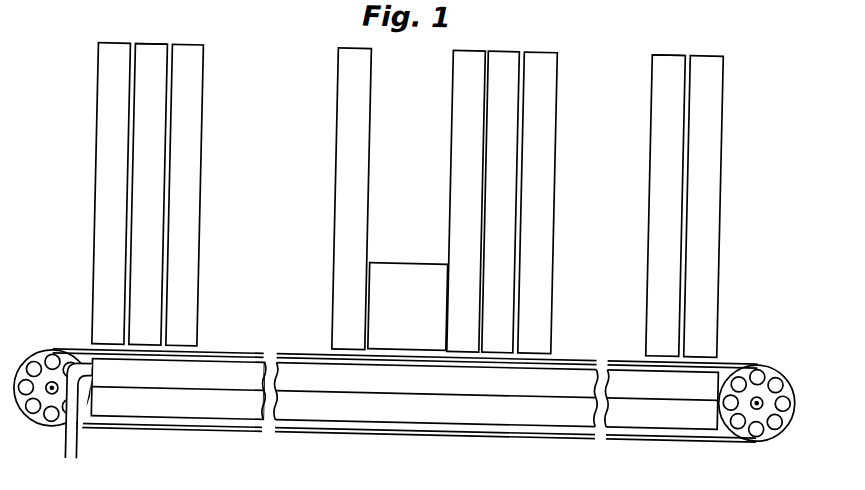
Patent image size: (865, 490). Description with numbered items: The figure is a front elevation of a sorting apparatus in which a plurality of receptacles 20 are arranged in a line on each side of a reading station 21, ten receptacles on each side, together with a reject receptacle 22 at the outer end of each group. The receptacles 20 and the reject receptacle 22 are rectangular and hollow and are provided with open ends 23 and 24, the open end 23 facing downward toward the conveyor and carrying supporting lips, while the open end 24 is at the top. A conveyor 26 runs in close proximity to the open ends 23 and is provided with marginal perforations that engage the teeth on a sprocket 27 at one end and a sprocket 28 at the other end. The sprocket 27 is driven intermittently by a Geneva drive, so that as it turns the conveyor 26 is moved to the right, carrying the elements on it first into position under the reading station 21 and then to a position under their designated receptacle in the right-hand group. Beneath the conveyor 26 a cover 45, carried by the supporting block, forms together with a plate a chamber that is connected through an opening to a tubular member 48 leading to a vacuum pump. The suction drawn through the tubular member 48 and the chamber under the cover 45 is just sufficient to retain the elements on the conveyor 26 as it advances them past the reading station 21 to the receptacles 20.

The receptacles 20 is at (199, 135).
The reading station 21 is at (411, 264).
The reject receptacle 22 is at (96, 195).
The open end 23 is at (193, 349).
The open end 24 is at (153, 56).
The conveyor 26 is at (147, 434).
The sprocket 27 is at (50, 432).
The sprocket 28 is at (770, 427).
The cover 45 is at (412, 390).
The tubular member 48 is at (82, 448).